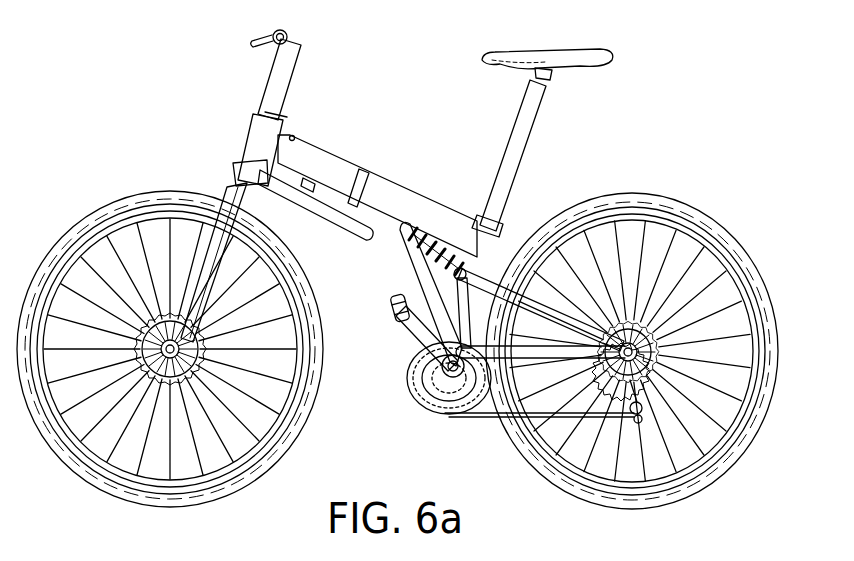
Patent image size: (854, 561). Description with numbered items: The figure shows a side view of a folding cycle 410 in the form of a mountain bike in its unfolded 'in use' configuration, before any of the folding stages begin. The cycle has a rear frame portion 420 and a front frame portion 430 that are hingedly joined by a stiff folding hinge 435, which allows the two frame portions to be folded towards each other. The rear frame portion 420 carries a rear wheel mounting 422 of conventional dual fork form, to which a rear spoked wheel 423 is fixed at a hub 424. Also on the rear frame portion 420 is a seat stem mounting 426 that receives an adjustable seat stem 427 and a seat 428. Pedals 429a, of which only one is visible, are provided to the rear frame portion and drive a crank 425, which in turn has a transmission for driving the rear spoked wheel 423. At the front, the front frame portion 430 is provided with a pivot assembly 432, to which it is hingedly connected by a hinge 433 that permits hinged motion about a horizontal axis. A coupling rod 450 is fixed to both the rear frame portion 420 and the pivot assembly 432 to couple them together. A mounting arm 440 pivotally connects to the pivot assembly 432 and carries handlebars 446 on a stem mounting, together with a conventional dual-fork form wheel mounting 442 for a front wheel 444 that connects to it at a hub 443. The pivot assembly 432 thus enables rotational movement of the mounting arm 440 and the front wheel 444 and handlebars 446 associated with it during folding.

The folding cycle 410 is at (429, 84).
The rear frame portion 420 is at (470, 192).
The rear wheel mounting 422 is at (580, 235).
The rear spoked wheel 423 is at (607, 472).
The hub 424 is at (670, 260).
The crank 425 is at (445, 395).
The seat stem mounting 426 is at (505, 226).
The adjustable seat stem 427 is at (535, 110).
The seat 428 is at (603, 57).
The pedal 429a is at (391, 306).
The front frame portion 430 is at (305, 192).
The pivot assembly 432 is at (257, 158).
The hinge 433 is at (295, 137).
The folding hinge 435 is at (365, 171).
The mounting arm 440 is at (275, 84).
The wheel mounting 442 is at (200, 257).
The hub 443 is at (168, 356).
The front wheel 444 is at (270, 408).
The handlebars 446 is at (272, 35).
The coupling rod 450 is at (347, 213).